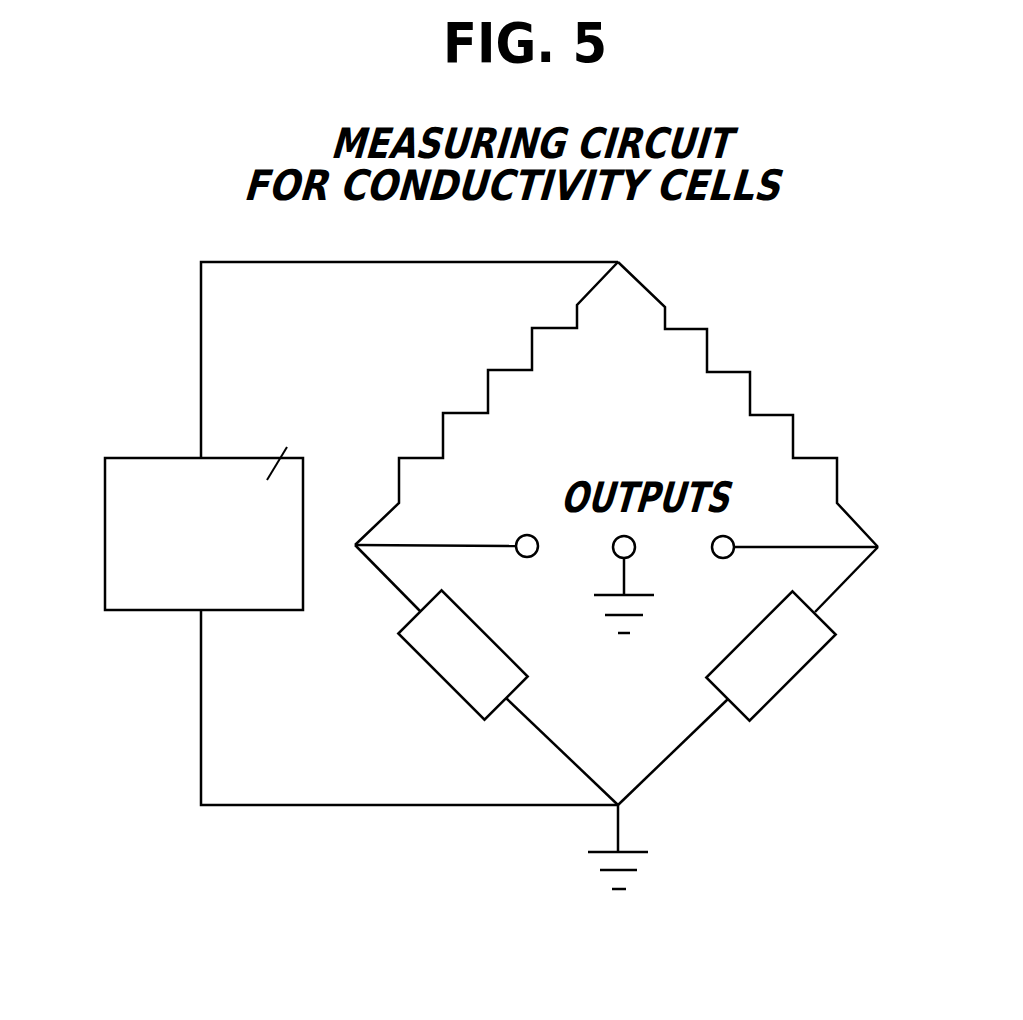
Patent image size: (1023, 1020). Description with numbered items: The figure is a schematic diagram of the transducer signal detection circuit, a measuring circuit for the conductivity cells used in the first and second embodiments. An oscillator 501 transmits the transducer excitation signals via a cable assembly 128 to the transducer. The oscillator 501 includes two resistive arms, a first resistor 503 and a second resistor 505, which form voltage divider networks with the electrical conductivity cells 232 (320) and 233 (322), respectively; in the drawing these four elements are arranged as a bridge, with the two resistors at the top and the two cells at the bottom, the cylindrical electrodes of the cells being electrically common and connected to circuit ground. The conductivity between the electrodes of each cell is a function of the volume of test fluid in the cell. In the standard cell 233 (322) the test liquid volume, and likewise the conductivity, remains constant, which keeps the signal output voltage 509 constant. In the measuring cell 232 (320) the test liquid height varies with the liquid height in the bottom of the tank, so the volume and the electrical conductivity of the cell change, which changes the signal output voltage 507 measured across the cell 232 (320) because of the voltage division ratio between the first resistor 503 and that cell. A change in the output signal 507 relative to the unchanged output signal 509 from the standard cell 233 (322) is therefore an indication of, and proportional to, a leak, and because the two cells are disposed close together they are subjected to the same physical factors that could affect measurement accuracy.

The oscillator 501 is at (176, 587).
The resistor-1 503 is at (533, 345).
The resistor-2 505 is at (760, 407).
The signal output voltage 507 is at (577, 540).
The signal output voltage 509 is at (698, 533).
The cable assembly 128 is at (369, 559).
The electrical conductivity cell 232 is at (412, 697).
The electrical conductivity cell 320 is at (448, 673).
The electrical conductivity cell 233 is at (808, 710).
The electrical conductivity cell 322 is at (775, 690).